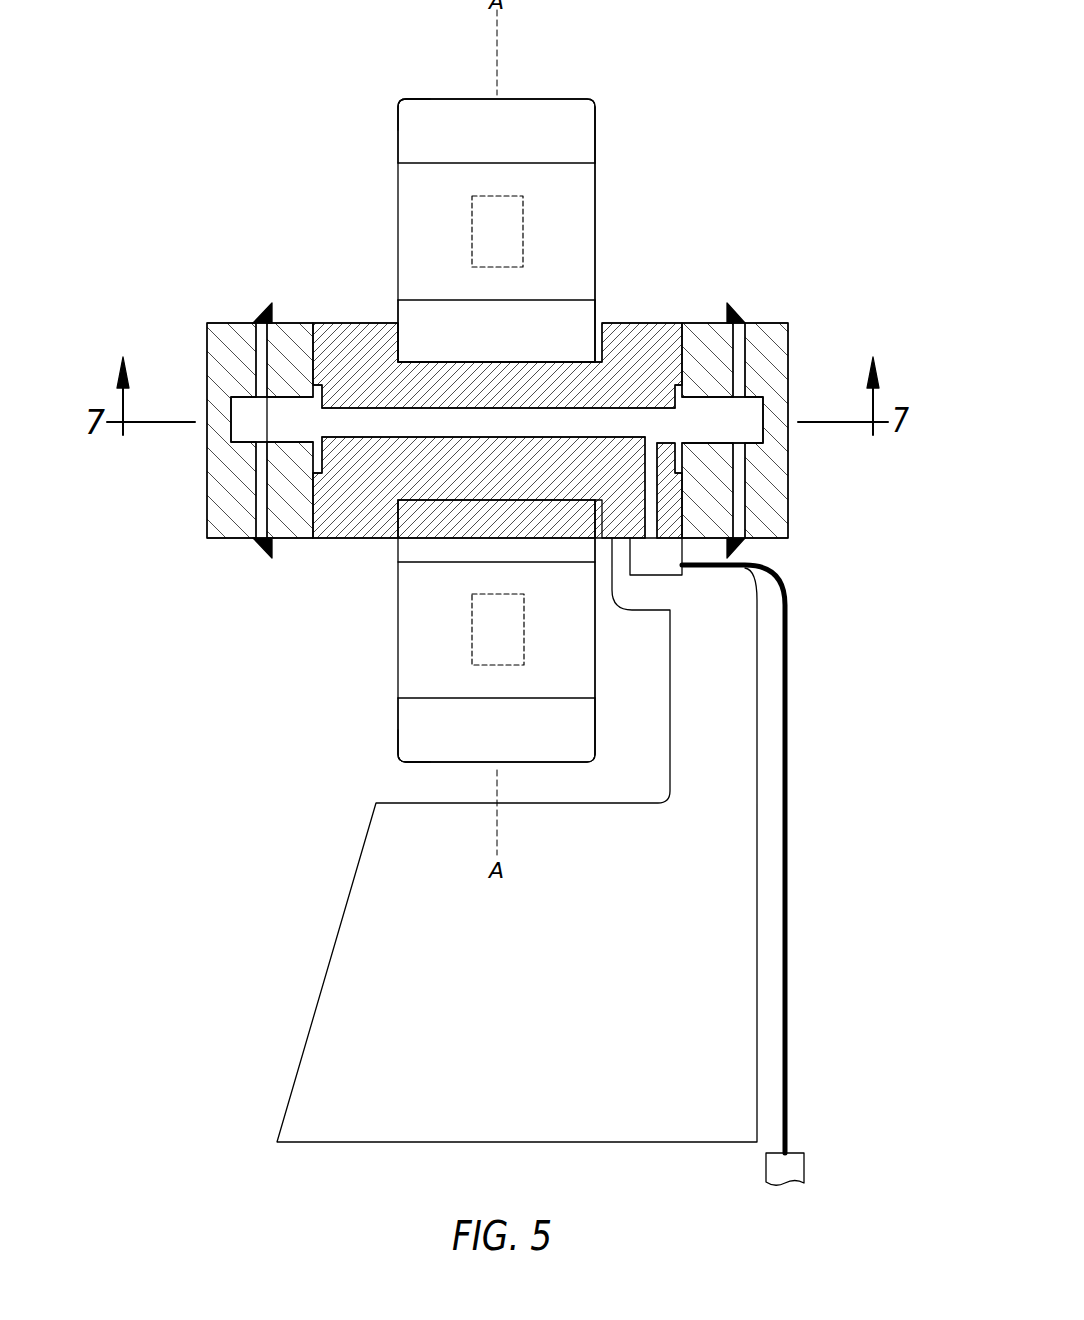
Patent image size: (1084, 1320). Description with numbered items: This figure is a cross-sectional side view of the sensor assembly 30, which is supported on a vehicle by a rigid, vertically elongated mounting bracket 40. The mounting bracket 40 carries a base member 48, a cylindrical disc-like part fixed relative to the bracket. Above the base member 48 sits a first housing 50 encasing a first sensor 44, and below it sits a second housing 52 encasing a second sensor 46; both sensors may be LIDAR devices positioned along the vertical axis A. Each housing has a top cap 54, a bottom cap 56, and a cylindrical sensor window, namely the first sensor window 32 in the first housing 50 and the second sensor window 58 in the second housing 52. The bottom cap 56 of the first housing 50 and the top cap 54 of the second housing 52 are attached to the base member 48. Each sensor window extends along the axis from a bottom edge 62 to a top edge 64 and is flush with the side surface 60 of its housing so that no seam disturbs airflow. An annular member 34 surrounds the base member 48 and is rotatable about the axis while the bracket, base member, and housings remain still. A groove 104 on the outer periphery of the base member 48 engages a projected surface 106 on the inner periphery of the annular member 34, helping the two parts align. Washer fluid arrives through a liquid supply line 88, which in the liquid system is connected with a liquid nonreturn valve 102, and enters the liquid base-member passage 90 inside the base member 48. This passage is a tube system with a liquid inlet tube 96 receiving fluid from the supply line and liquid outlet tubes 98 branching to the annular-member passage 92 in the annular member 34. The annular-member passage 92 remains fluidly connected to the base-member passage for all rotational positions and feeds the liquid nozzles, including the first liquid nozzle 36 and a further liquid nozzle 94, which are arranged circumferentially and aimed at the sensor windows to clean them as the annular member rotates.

The sensor assembly 30 is at (226, 112).
The first sensor window 32 is at (398, 200).
The annular member 34 is at (207, 340).
The first liquid nozzle 36 is at (262, 305).
The mounting bracket 40 is at (333, 943).
The first sensor 44 is at (523, 215).
The second sensor 46 is at (524, 615).
The base member 48 is at (648, 323).
The first housing 50 is at (425, 97).
The second housing 52 is at (425, 765).
The top cap 54 is at (398, 142).
The bottom cap 56 is at (398, 305).
The second sensor window 58 is at (398, 668).
The side surface 60 is at (597, 142).
The bottom edge 62 is at (478, 300).
The top edge 64 is at (477, 162).
The liquid supply line 88 is at (787, 820).
The liquid base-member passage 90 is at (613, 408).
The annular-member passage 92 is at (763, 412).
The liquid nozzle 94 is at (745, 305).
The liquid inlet tube 96 is at (660, 512).
The liquid outlet tube 98 is at (667, 405).
The liquid nonreturn valve 102 is at (806, 1165).
The groove 104 is at (322, 463).
The projected surface 106 is at (323, 463).